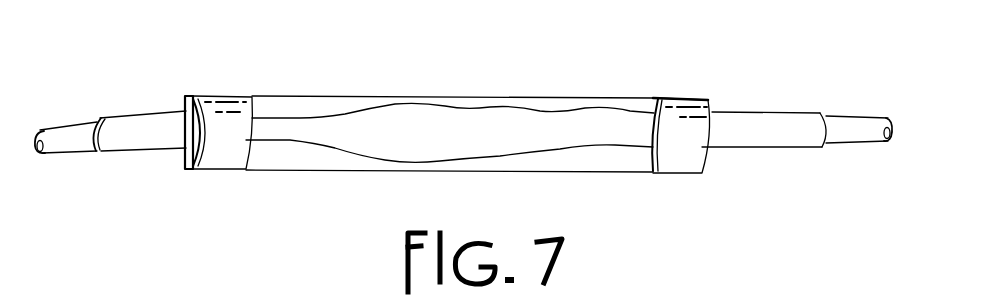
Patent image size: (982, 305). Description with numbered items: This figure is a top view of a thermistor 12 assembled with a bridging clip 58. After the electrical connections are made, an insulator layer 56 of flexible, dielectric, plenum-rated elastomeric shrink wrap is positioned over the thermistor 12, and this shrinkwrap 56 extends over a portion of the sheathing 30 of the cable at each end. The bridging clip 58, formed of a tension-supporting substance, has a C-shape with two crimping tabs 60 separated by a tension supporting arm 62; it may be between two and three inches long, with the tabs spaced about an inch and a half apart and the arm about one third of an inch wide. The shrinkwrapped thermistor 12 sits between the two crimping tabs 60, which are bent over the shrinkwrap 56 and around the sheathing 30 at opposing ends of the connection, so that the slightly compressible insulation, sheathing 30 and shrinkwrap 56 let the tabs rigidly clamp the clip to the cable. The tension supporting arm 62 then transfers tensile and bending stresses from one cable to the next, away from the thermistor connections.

The thermistor 12 is at (422, 142).
The sheathing 30 is at (58, 133).
The insulator layer 56 is at (135, 122).
The bridging clip 58 is at (463, 86).
The crimping tabs 60 is at (227, 130).
The tension supporting arm 62 is at (305, 108).